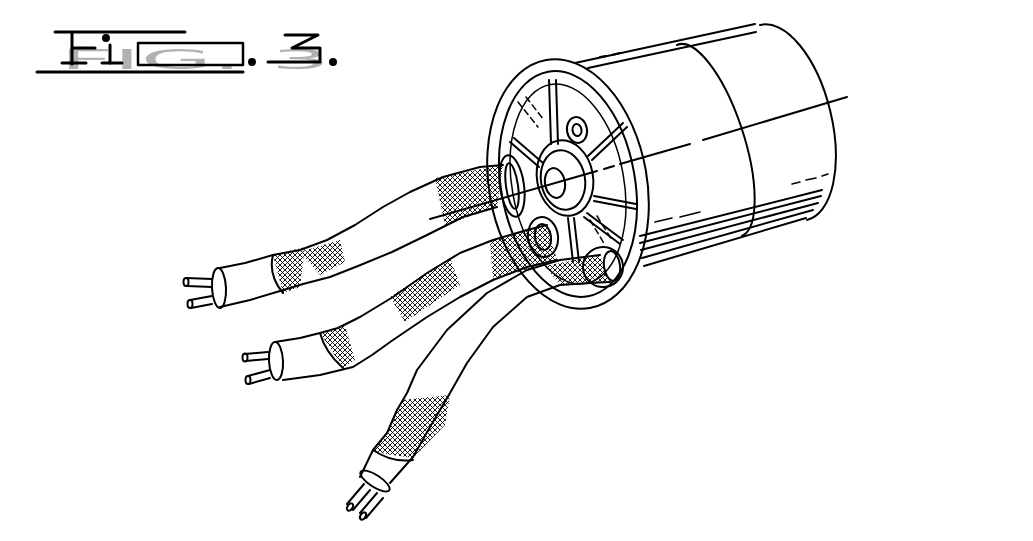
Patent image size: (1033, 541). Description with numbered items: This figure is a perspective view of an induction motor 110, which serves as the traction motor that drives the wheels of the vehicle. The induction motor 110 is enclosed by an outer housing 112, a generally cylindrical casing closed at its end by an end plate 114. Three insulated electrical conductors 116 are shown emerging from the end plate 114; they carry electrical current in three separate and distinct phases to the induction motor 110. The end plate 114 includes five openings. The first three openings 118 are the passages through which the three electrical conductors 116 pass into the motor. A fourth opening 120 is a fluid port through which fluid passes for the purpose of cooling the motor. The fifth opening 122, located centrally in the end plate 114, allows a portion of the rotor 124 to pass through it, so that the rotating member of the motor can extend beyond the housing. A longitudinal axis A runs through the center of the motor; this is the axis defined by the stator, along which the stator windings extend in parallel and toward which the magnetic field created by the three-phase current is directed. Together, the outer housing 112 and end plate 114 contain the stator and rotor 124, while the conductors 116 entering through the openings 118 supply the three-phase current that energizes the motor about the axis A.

The induction motor 110 is at (453, 108).
The outer housing 112 is at (672, 45).
The end plate 114 is at (508, 99).
The insulated electrical conductors 116 is at (242, 268).
The first three openings 118 is at (503, 143).
The fourth opening 120 is at (580, 115).
The fifth opening 122 is at (660, 184).
The rotor 124 is at (553, 153).
The longitudinal axis A is at (847, 97).